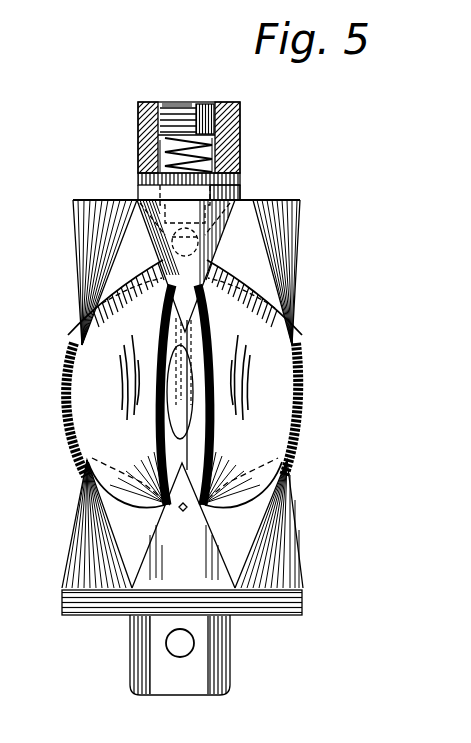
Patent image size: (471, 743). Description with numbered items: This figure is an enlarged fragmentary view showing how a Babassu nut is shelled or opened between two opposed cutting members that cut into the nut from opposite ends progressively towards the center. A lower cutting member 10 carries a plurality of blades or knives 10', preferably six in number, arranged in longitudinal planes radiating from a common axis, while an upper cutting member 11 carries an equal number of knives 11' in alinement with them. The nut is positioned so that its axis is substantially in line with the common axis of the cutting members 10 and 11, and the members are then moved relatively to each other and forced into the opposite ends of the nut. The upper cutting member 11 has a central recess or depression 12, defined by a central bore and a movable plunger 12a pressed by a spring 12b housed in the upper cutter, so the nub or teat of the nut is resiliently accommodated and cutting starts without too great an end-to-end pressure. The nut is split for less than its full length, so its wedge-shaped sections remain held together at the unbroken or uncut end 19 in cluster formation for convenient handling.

The lower cutting member 10 is at (205, 579).
The blades or knives 10' is at (185, 519).
The upper cutting member 11 is at (196, 251).
The blades or knives 11' is at (187, 272).
The recess or depression 12 is at (237, 193).
The movable plunger 12a is at (237, 158).
The spring 12b is at (238, 128).
The unbroken or uncut end 19 is at (175, 250).